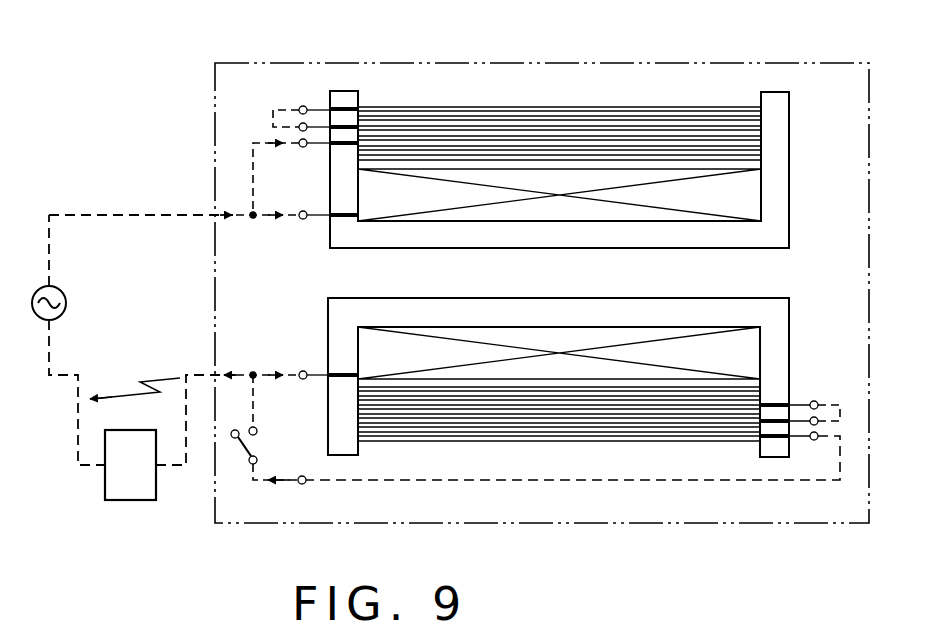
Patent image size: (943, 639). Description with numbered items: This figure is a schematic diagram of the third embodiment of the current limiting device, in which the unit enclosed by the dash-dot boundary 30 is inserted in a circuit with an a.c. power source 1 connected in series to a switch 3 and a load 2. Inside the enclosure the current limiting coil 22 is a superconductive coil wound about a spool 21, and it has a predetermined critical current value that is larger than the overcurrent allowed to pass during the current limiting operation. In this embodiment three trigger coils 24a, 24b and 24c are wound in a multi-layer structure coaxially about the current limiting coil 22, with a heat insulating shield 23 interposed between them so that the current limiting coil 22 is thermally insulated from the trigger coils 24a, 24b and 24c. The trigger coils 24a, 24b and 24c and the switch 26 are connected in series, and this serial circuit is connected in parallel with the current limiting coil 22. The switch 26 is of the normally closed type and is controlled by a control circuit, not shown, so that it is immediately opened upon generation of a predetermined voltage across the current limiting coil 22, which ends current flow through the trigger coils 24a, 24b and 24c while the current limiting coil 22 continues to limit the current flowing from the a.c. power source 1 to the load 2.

The high-voltage transformer unit enclosure 30 is at (347, 62).
The switch 3 is at (125, 204).
The a.c. power source 1 is at (67, 303).
The load 2 is at (131, 501).
The spool 21 is at (782, 225).
The trigger coil 24a is at (757, 142).
The trigger coil 24b is at (757, 125).
The trigger coil 24c is at (757, 113).
The current limiting coil 22 is at (752, 347).
The heat insulating shield 23 is at (760, 391).
The switch 26 is at (250, 443).